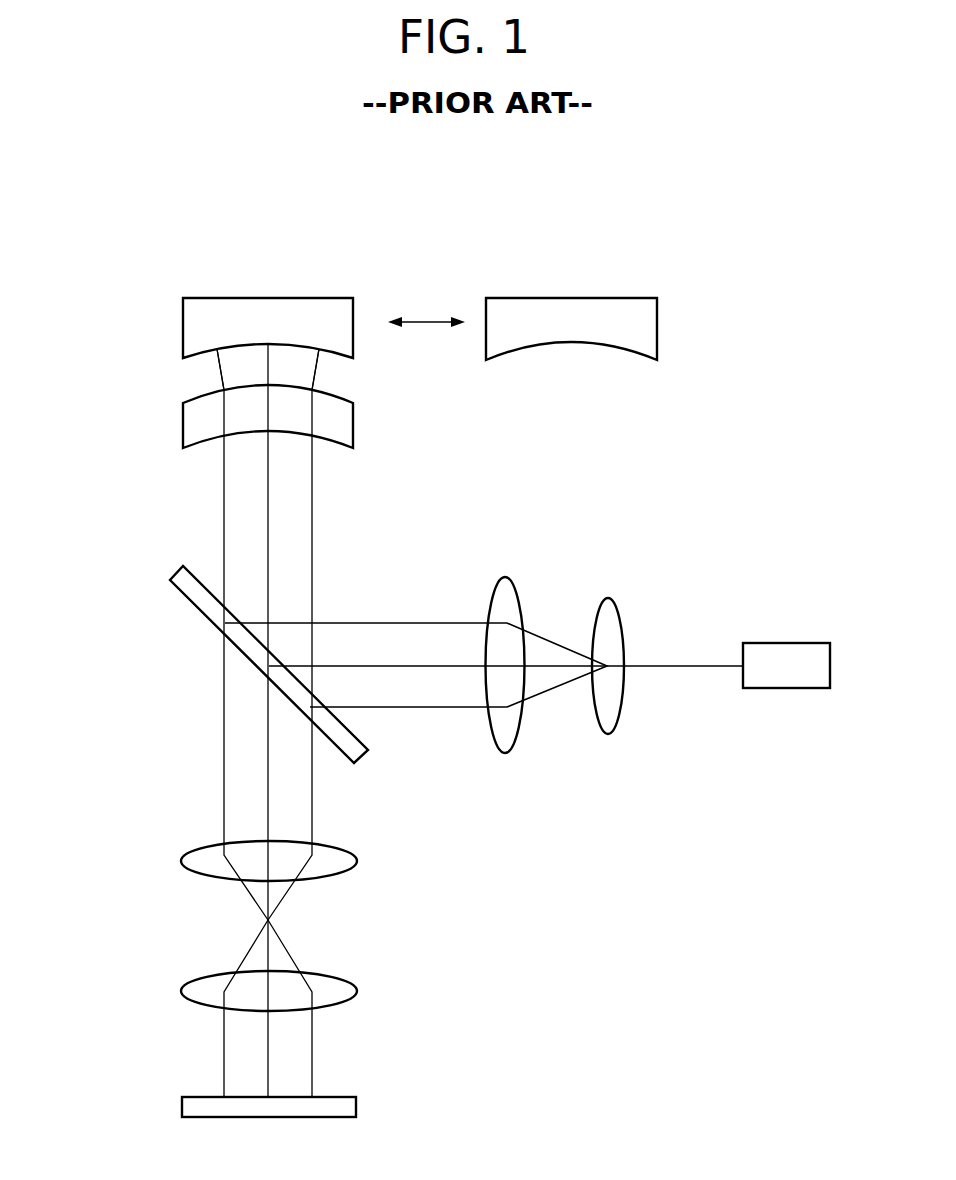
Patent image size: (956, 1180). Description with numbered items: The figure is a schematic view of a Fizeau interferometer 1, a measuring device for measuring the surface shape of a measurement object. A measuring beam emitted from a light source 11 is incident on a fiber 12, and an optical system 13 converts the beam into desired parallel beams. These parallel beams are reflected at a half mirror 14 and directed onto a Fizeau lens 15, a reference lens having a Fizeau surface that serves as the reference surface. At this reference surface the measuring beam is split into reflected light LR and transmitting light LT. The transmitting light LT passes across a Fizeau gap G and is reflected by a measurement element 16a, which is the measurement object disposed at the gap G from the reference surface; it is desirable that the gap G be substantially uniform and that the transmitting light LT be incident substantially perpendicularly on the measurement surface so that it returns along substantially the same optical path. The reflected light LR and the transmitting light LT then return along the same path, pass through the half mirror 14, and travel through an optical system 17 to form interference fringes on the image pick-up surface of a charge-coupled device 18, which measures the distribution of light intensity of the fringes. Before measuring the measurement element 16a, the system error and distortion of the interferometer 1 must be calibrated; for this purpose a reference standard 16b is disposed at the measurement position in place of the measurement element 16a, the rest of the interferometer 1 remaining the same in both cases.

The Fizeau interferometer 1 is at (591, 226).
The light source 11 is at (788, 688).
The fiber 12 is at (673, 666).
The optical system 13 is at (613, 763).
The half mirror 14 is at (178, 588).
The Fizeau lens 15 is at (183, 432).
The measurement element 16a is at (183, 318).
The reference standard 16b is at (657, 318).
The optical system 17 is at (163, 843).
The charge-coupled device (CCD) 18 is at (182, 1103).
The Fizeau gap G is at (237, 375).
The transmitting light LT is at (307, 723).
The reflected light LR is at (318, 720).